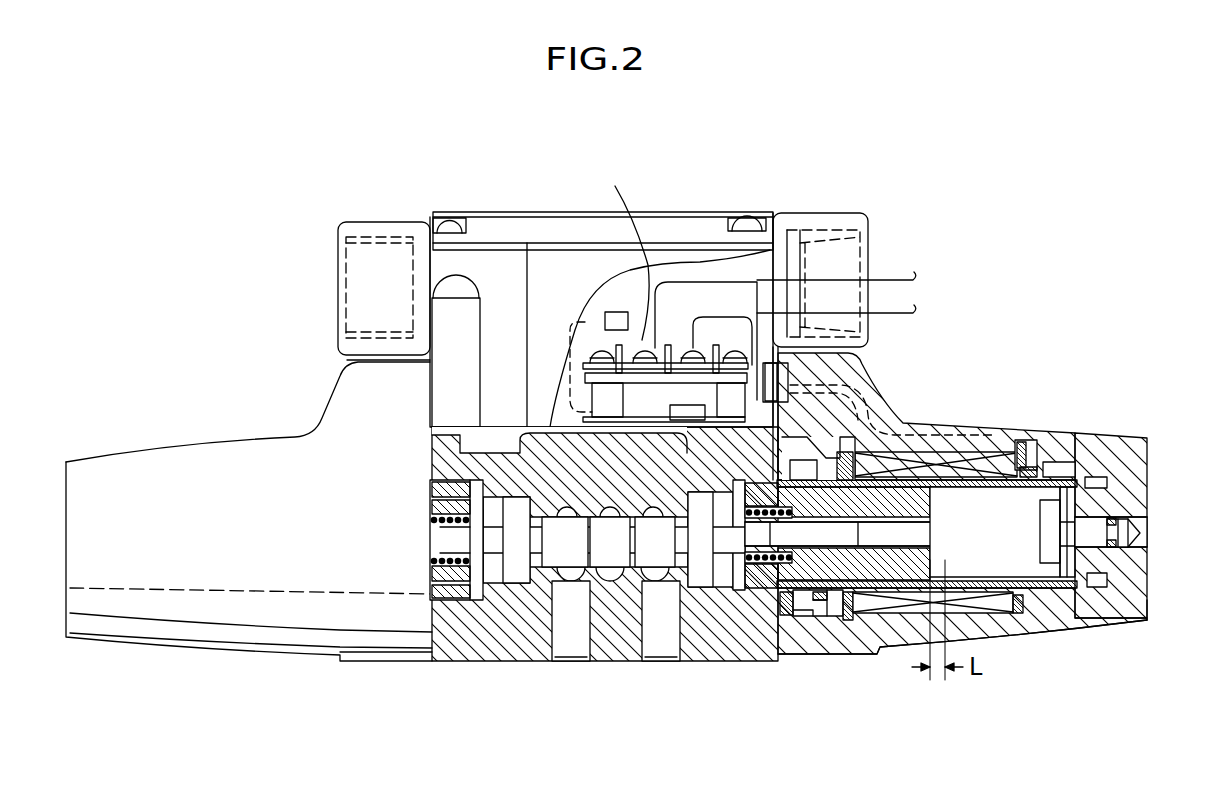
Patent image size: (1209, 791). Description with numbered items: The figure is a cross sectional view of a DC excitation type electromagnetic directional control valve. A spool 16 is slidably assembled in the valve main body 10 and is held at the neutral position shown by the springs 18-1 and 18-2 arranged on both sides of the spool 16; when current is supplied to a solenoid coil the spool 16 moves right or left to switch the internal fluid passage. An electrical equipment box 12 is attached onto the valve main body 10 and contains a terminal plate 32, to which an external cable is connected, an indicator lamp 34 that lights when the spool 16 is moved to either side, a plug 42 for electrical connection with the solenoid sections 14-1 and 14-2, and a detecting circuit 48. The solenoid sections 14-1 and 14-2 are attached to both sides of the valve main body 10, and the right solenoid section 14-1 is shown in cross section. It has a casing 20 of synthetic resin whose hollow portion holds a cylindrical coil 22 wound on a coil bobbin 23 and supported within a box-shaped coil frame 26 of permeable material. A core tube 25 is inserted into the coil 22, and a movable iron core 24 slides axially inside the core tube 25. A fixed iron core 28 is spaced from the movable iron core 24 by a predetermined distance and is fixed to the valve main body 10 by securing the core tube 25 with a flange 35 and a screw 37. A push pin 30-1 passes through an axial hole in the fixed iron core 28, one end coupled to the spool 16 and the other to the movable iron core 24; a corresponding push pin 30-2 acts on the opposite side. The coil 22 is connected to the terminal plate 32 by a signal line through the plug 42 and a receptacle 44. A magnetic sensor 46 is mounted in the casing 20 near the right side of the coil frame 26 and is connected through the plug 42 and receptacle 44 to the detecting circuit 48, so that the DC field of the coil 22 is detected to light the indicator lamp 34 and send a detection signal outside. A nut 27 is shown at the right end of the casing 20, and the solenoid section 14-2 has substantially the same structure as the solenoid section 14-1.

The valve main body 10 is at (467, 663).
The electrical equipment box 12 is at (539, 211).
The solenoid section 14-1 is at (1097, 633).
The solenoid section 14-2 is at (137, 467).
The spool 16 is at (672, 577).
The spring 18-1 is at (768, 595).
The spring 18-2 is at (430, 588).
The casing 20 is at (1133, 442).
The coil 22 is at (907, 462).
The coil bobbin 23 is at (1020, 438).
The movable iron core 24 is at (1008, 565).
The core tube 25 is at (1135, 603).
The coil frame 26 is at (1033, 460).
The nut 27 is at (1123, 530).
The fixed iron core 28 is at (857, 612).
The push pin 30-1 is at (920, 614).
The second port 30-2 is at (488, 566).
The terminal plate 32 is at (625, 248).
The indicator lamp 34 is at (620, 315).
The flange 35 is at (783, 597).
The screw 37 is at (810, 598).
The plug 42 is at (768, 362).
The receptacle 44 is at (785, 383).
The magnetic sensor 46 is at (1063, 467).
The detecting circuit 48 is at (690, 405).